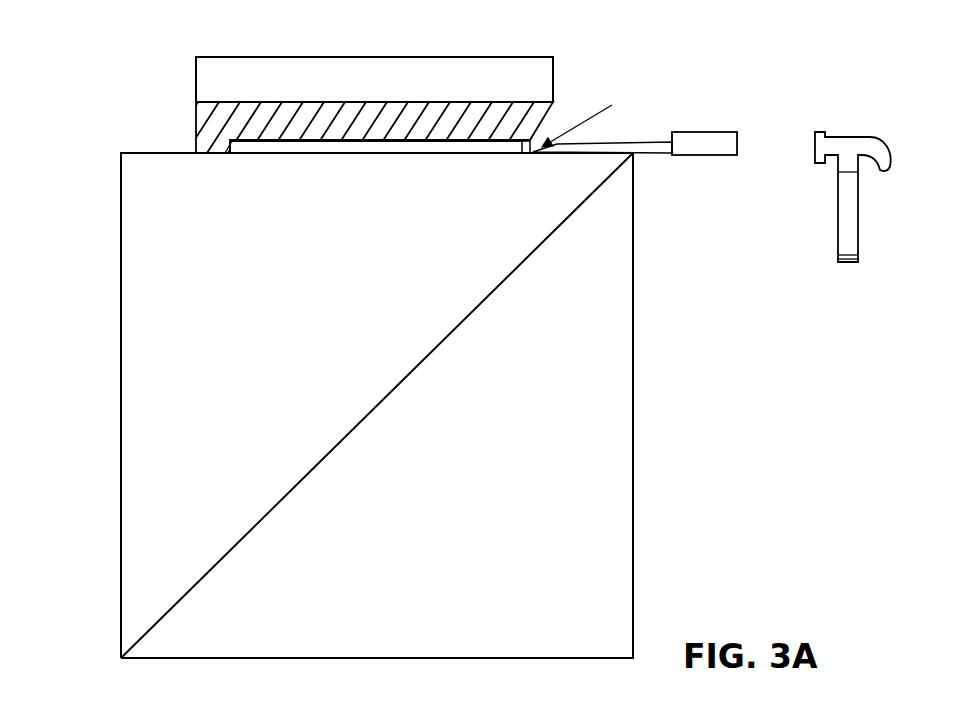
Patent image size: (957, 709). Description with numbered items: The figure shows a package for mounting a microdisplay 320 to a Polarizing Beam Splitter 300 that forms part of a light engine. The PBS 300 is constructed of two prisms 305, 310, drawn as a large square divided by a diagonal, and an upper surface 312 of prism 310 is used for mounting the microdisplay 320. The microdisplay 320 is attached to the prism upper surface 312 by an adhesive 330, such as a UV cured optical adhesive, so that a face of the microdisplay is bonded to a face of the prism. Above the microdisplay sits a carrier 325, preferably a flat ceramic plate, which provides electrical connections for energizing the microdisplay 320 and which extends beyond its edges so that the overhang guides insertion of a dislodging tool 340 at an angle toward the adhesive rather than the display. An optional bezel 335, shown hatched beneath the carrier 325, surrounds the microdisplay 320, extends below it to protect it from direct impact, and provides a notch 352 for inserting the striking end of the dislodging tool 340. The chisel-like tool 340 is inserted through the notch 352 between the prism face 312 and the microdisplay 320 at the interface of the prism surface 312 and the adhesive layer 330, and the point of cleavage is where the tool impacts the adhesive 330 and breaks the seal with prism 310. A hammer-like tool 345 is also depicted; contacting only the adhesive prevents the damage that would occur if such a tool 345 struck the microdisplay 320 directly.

The Polarizing Beam Splitter 300 is at (102, 460).
The prism 305 is at (556, 623).
The prism 310 is at (188, 534).
The upper surface 312 is at (320, 157).
The microdisplay 320 is at (438, 133).
The carrier 325 is at (196, 77).
The adhesive 330 is at (383, 165).
The bezel 335 is at (196, 137).
The dislodging tool 340 is at (737, 143).
The tool 345 is at (848, 262).
The notch 352 is at (531, 153).